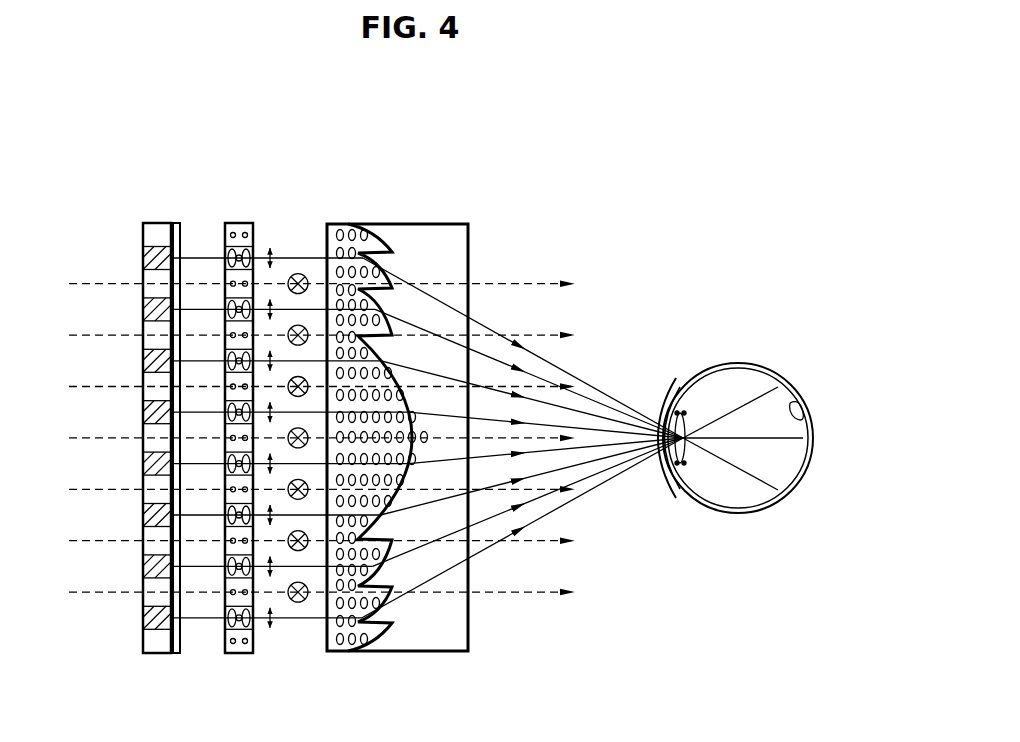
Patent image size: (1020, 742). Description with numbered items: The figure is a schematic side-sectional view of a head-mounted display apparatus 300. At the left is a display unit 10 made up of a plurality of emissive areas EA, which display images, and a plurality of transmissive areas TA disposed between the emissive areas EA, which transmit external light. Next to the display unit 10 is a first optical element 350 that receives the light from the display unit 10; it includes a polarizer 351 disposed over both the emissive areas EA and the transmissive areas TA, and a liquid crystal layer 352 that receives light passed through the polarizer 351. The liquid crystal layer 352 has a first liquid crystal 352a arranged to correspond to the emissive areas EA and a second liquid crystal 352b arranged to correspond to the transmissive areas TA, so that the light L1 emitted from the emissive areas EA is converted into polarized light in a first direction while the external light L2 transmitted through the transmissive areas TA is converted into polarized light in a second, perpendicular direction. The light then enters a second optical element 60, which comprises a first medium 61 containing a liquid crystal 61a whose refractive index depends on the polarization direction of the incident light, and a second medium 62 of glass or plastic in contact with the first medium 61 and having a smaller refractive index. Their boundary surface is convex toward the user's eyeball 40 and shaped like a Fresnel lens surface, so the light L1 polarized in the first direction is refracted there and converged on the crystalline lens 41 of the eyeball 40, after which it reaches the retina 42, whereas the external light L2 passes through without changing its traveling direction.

The head-mounted display apparatus 300 is at (611, 163).
The display unit 10 is at (147, 219).
The transmissive areas TA is at (150, 237).
The emissive areas EA is at (143, 257).
The first optical element 350 is at (175, 158).
The polarizer 351 is at (180, 223).
The liquid crystal layer 352 is at (232, 223).
The first liquid crystal 352a is at (249, 252).
The second liquid crystal 352b is at (244, 233).
The light L1 is at (205, 620).
The external light L2 is at (97, 592).
The second optical element 60 is at (448, 207).
The first medium 61 is at (383, 654).
The liquid crystal 61a is at (370, 230).
The second medium 62 is at (420, 232).
The user's eyeball 40 is at (763, 358).
The crystalline lens 41 is at (678, 406).
The retina 42 is at (797, 410).